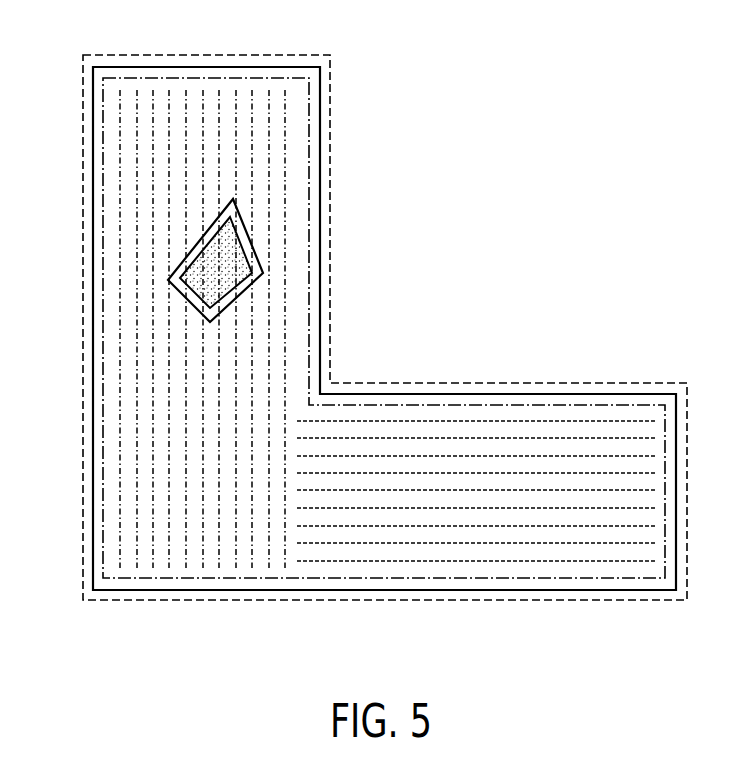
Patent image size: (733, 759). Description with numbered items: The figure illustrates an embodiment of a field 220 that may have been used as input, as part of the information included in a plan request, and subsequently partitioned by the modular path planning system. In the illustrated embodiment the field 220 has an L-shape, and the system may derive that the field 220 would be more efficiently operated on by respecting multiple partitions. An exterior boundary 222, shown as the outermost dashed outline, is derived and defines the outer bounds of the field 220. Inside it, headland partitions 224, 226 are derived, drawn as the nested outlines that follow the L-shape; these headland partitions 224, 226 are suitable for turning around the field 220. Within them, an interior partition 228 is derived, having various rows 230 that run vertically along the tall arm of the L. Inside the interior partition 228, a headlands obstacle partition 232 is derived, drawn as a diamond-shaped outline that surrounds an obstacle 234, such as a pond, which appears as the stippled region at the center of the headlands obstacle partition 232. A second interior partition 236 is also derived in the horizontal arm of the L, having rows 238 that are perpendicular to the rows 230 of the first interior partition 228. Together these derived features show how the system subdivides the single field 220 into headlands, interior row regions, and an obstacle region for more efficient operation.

The field 220 is at (512, 163).
The exterior boundary 222 is at (255, 56).
The headland partition 224 is at (97, 82).
The headland partition 226 is at (110, 148).
The interior partition 228 is at (217, 160).
The rows 230 is at (187, 106).
The headlands obstacle partition 232 is at (177, 290).
The obstacle 234 is at (220, 270).
The second interior partition 236 is at (542, 452).
The rows 238 is at (517, 508).